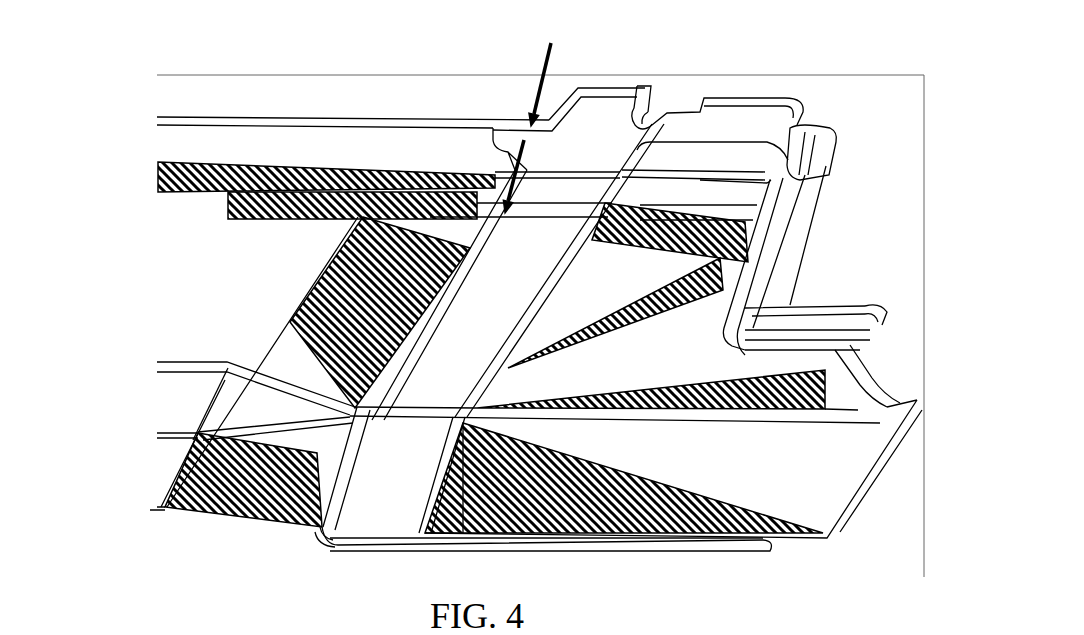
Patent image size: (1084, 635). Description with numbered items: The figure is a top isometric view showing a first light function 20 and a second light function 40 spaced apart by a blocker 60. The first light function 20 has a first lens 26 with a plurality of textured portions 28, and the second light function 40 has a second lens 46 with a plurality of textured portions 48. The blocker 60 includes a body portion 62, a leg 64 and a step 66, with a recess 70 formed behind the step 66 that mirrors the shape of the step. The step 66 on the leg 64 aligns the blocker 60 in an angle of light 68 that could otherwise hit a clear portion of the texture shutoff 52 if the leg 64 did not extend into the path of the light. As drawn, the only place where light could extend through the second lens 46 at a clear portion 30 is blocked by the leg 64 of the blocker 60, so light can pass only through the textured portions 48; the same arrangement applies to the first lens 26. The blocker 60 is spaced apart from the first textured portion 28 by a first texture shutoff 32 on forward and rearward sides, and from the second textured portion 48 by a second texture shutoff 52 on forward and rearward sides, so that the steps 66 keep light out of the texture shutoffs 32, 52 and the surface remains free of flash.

The first light function 20 is at (869, 144).
The first lens 26 is at (705, 345).
The textured portions 28 is at (823, 382).
The clear portion 30 is at (624, 511).
The first texture shutoff 32 is at (521, 488).
The second light function 40 is at (158, 100).
The second lens 46 is at (262, 333).
The textured portions 48 is at (165, 178).
The second texture shutoff 52 is at (357, 442).
The blocker 60 is at (640, 88).
The body portion 62 is at (318, 536).
The leg 64 is at (507, 120).
The step 66 is at (381, 118).
The angle of light 68 is at (527, 115).
The recess 70 is at (487, 148).